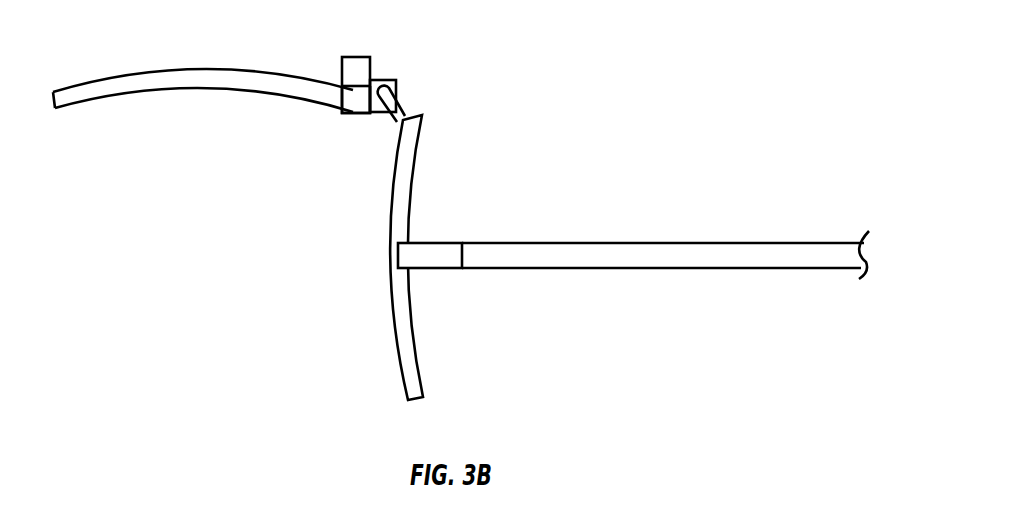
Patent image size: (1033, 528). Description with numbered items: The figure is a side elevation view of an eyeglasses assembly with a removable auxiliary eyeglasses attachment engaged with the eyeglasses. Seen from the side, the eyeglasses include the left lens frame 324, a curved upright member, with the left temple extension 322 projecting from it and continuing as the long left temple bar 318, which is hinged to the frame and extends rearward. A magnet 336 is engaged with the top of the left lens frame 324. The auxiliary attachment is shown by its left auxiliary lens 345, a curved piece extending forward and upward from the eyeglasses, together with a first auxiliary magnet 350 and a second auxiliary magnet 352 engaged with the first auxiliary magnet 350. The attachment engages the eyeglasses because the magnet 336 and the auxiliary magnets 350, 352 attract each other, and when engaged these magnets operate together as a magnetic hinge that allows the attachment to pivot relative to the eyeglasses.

The left temple bar 318 is at (668, 243).
The left temple extension 322 is at (430, 270).
The left lens frame 324 is at (420, 351).
The magnet 336 is at (396, 82).
The left auxiliary lens 345 is at (205, 69).
The first auxiliary magnet 350 is at (356, 114).
The second auxiliary magnet 352 is at (357, 57).